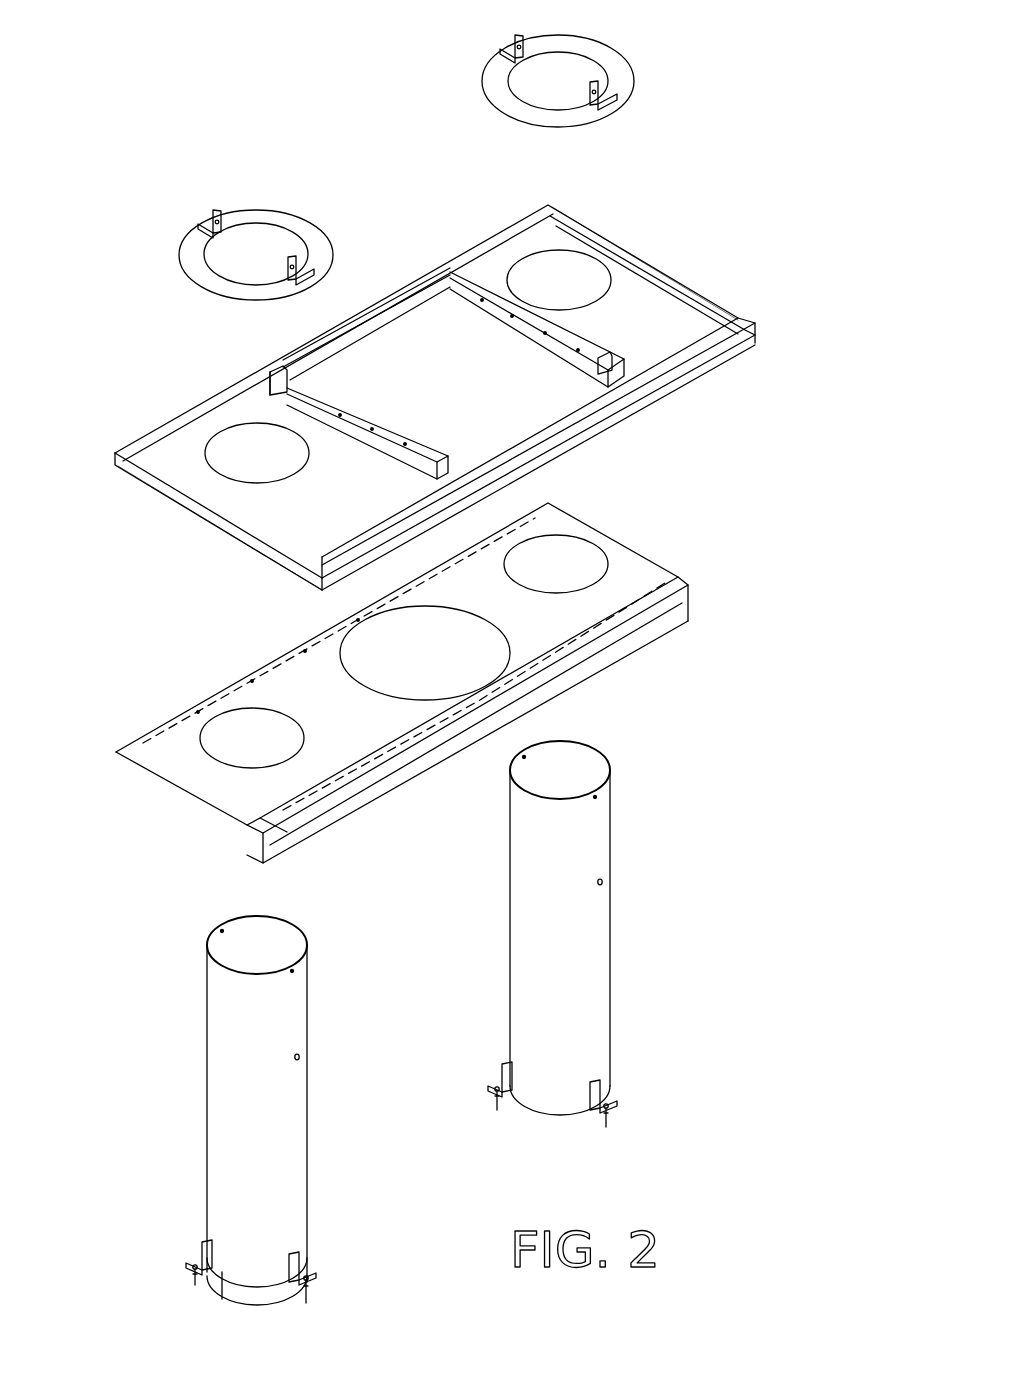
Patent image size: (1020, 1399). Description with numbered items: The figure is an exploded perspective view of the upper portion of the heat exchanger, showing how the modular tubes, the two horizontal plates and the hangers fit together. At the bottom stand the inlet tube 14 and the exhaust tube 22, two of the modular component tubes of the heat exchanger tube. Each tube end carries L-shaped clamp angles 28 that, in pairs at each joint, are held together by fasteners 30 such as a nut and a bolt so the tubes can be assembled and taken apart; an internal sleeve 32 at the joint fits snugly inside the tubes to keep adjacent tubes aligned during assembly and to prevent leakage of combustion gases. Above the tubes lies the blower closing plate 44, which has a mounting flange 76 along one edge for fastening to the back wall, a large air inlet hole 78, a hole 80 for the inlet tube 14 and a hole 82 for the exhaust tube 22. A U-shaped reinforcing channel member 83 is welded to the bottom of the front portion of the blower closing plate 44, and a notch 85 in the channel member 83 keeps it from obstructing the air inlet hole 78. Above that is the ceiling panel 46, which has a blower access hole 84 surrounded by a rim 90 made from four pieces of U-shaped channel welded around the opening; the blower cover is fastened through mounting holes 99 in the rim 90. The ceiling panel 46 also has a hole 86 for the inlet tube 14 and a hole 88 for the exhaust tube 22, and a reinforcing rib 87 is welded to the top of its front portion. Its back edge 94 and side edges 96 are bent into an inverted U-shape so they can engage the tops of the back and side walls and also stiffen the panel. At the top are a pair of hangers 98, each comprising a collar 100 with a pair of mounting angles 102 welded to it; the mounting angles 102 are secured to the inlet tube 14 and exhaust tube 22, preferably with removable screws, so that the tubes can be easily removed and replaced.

The inlet tube 14 is at (218, 1080).
The exhaust tube 22 is at (602, 1003).
The L-shaped clamp angle 28 is at (508, 1077).
The fastener 30 is at (494, 1106).
The internal sleeve 32 is at (215, 1292).
The blower closing plate 44 is at (188, 772).
The ceiling panel 46 is at (152, 462).
The mounting flange 76 is at (163, 723).
The air inlet hole 78 is at (342, 660).
The hole for the inlet tube 80 is at (215, 720).
The hole for the exhaust tube 82 is at (605, 553).
The U-shaped reinforcing channel member 83 is at (295, 838).
The blower access hole 84 is at (332, 360).
The notch 85 is at (527, 688).
The hole for the inlet tube 86 is at (210, 438).
The reinforcing rib 87 is at (728, 336).
The hole for the exhaust tube 88 is at (525, 255).
The rim 90 is at (422, 278).
The back edge 94 is at (160, 432).
The side edge 96 is at (207, 512).
The hanger 98 is at (389, 150).
The mounting hole 99 is at (278, 392).
The collar 100 is at (612, 60).
The mounting angle 102 is at (512, 50).